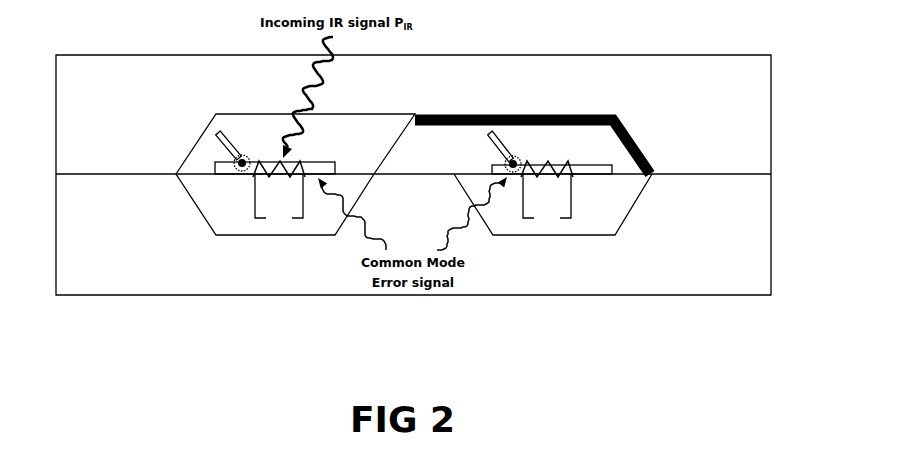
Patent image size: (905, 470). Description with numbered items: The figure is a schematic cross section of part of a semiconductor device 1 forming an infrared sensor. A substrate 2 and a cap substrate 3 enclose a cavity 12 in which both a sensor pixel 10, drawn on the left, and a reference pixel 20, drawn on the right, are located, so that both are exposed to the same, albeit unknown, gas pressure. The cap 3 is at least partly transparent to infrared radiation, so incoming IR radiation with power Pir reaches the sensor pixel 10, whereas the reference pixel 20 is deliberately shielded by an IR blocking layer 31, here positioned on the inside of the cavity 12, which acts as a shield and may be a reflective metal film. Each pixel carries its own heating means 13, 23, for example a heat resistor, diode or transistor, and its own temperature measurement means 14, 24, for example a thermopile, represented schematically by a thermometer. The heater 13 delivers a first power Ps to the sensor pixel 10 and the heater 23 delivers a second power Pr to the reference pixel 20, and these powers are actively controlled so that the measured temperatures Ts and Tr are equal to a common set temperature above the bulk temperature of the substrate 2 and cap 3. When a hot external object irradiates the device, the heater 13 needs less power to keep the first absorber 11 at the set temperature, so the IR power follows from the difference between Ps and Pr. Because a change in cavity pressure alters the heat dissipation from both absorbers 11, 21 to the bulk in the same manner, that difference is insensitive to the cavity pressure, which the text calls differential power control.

The semiconductor device 1 is at (118, 338).
The substrate 2 is at (740, 270).
The cap substrate 3 is at (740, 129).
The sensor pixel 10 is at (253, 308).
The first absorber 11 is at (327, 165).
The cavity 12 is at (414, 163).
The heating means 13 is at (265, 162).
The temperature measurement means 14 is at (237, 157).
The reference pixel 20 is at (557, 308).
The absorber 21 is at (598, 170).
The heating means 23 is at (543, 164).
The temperature measurement means 24 is at (497, 148).
The IR blocking layer 31 is at (626, 136).